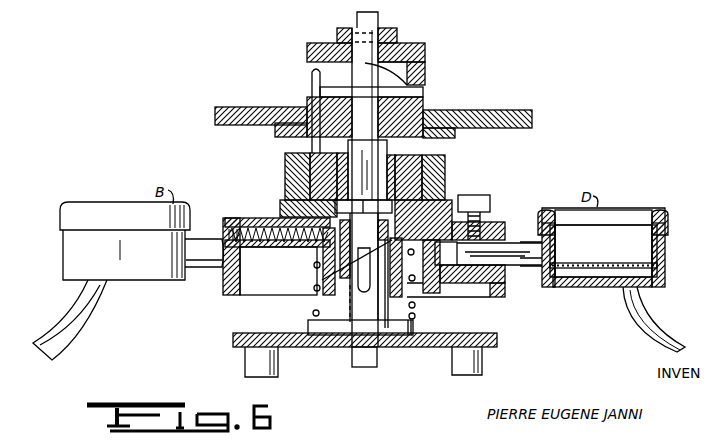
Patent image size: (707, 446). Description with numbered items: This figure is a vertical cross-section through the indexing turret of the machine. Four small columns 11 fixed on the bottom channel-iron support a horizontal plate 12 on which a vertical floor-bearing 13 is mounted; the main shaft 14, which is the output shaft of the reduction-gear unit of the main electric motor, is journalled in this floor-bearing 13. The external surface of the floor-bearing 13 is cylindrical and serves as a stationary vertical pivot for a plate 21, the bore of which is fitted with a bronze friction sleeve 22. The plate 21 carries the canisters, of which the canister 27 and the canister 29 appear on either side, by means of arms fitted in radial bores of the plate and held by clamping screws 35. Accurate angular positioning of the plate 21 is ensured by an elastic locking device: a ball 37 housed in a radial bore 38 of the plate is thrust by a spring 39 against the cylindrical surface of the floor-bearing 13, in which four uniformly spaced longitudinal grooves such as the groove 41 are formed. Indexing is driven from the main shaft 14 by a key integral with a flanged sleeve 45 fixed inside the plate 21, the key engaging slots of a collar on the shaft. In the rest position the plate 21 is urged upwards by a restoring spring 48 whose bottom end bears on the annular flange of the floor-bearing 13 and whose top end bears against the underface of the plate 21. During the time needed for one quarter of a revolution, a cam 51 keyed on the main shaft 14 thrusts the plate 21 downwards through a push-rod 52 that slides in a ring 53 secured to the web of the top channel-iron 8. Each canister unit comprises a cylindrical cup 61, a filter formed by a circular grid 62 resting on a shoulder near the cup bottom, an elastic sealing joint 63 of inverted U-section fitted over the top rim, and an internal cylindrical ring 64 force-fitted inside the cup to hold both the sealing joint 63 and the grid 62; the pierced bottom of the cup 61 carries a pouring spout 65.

The top channel-iron 8 is at (258, 112).
The small columns 11 is at (252, 352).
The horizontal plate 12 is at (273, 332).
The vertical floor-bearing 13 is at (374, 315).
The main shaft 14 is at (354, 352).
The plate 21 is at (441, 177).
The friction sleeve 22 is at (412, 300).
The canister 27 is at (120, 197).
The canister 29 is at (549, 200).
The clamping screws 35 is at (482, 200).
The ball 37 is at (317, 264).
The radial bore 38 is at (241, 220).
The spring 39 is at (263, 228).
The groove 41 is at (318, 286).
The flanged sleeve 45 is at (415, 163).
The restoring spring 48 is at (415, 317).
The cam 51 is at (423, 53).
The push-rod 52 is at (312, 75).
The ring 53 is at (414, 106).
The cylindrical cup 61 is at (665, 269).
The circular grid 62 is at (591, 262).
The elastic sealing joint 63 is at (665, 208).
The internal cylindrical ring 64 is at (558, 246).
The pouring spout 65 is at (648, 320).